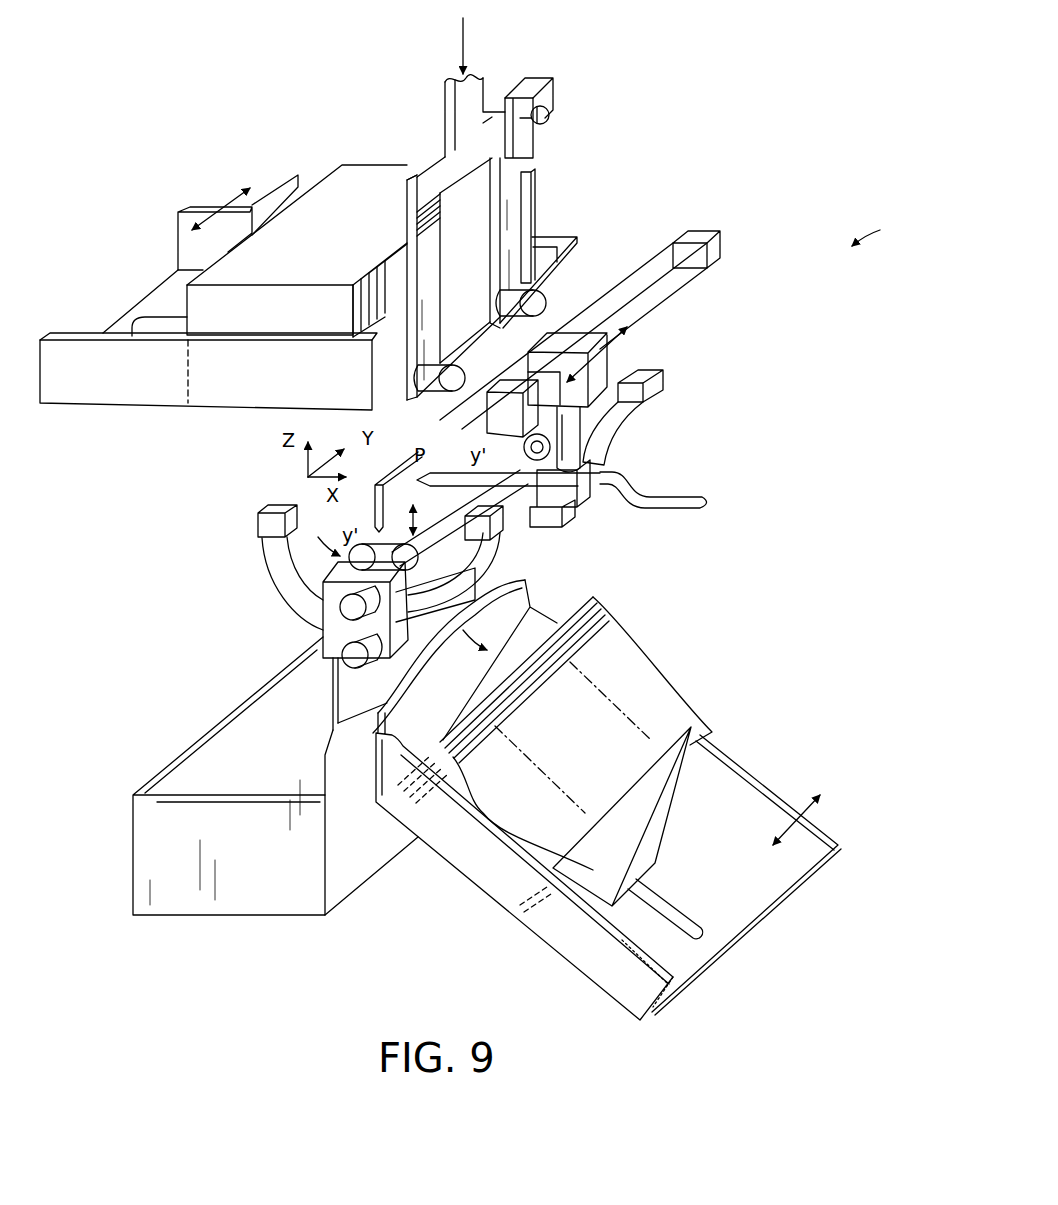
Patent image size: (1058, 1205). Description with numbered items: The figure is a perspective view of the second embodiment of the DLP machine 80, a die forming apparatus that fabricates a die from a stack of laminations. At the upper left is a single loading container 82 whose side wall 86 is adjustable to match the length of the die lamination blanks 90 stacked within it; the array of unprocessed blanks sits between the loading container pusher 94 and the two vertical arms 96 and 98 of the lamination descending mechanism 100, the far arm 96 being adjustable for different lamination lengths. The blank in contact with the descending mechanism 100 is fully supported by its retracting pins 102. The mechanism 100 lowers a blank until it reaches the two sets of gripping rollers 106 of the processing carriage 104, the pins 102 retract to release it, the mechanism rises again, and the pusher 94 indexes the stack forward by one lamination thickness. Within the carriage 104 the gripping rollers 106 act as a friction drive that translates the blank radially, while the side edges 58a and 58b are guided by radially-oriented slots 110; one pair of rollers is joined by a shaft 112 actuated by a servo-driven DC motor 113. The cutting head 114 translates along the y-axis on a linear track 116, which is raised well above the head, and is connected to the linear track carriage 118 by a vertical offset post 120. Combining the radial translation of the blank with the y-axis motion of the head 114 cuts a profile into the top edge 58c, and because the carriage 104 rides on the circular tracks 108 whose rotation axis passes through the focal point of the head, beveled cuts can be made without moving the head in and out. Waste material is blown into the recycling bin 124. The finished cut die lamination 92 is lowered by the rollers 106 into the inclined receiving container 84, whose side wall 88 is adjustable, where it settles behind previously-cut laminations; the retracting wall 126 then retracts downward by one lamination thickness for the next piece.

The DLP machine 80 is at (879, 228).
The loading container 82 is at (106, 411).
The inclined receiving container 84 is at (510, 877).
The side wall of loading container 86 is at (548, 228).
The side wall of receiving container 88 is at (743, 827).
The die lamination blank 90 is at (476, 295).
The cut die lamination 92 is at (513, 637).
The loading container pusher 94 is at (268, 182).
The far vertical arm 96 is at (533, 158).
The vertical arm 98 is at (416, 216).
The lamination descending mechanism 100 is at (447, 120).
The retracting pins 102 is at (544, 292).
The processing carriage 104 is at (322, 642).
The gripping rollers 106 is at (594, 462).
The circular tracks 108 is at (660, 399).
The radially-oriented slots 110 is at (556, 520).
The shaft 112 is at (417, 493).
The servo-driven DC motor 113 is at (322, 606).
The cutting head 114 is at (586, 488).
The linear track 116 is at (700, 278).
The linear track carriage 118 is at (609, 366).
The vertical offset post 120 is at (582, 440).
The recycling bin 124 is at (234, 782).
The receiving container retracting wall 126 is at (660, 850).
The side edge of lamination blank 58a is at (372, 395).
The side edge of lamination blank 58b is at (536, 190).
The top edge of lamination blank 58c is at (385, 257).